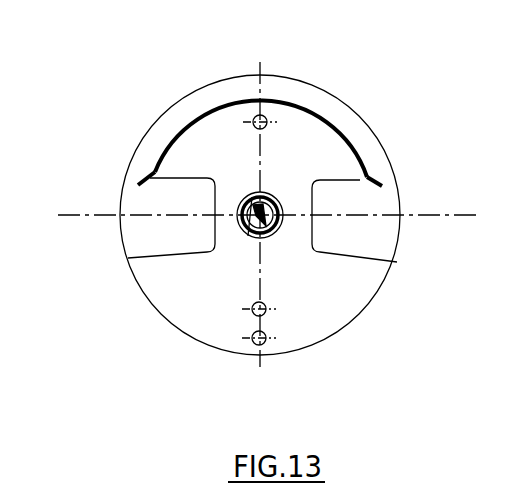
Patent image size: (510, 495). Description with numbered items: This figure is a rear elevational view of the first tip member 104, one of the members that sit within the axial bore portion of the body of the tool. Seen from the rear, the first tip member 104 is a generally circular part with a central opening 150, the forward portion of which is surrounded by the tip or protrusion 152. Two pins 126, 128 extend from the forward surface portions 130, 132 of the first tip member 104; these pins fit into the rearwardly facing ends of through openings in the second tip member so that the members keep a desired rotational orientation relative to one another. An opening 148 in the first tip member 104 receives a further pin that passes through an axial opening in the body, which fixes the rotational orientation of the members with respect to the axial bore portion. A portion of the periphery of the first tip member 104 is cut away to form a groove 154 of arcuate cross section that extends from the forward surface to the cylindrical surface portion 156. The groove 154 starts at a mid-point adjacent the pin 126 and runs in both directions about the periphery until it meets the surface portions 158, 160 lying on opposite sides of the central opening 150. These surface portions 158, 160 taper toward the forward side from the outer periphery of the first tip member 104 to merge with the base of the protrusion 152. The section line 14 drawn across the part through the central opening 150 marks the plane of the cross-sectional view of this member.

The section line 14 is at (58, 215).
The first tip member 104 is at (372, 92).
The pin 126 is at (268, 119).
The pin 128 is at (267, 313).
The forward surface portion 130 is at (325, 163).
The forward surface portion 132 is at (352, 291).
The opening 148 is at (242, 347).
The central opening 150 is at (252, 197).
The tip or protrusion 152 is at (248, 236).
The groove 154 is at (166, 126).
The cylindrical surface portion 156 is at (178, 100).
The surface portion 158 is at (135, 244).
The surface portion 160 is at (358, 200).